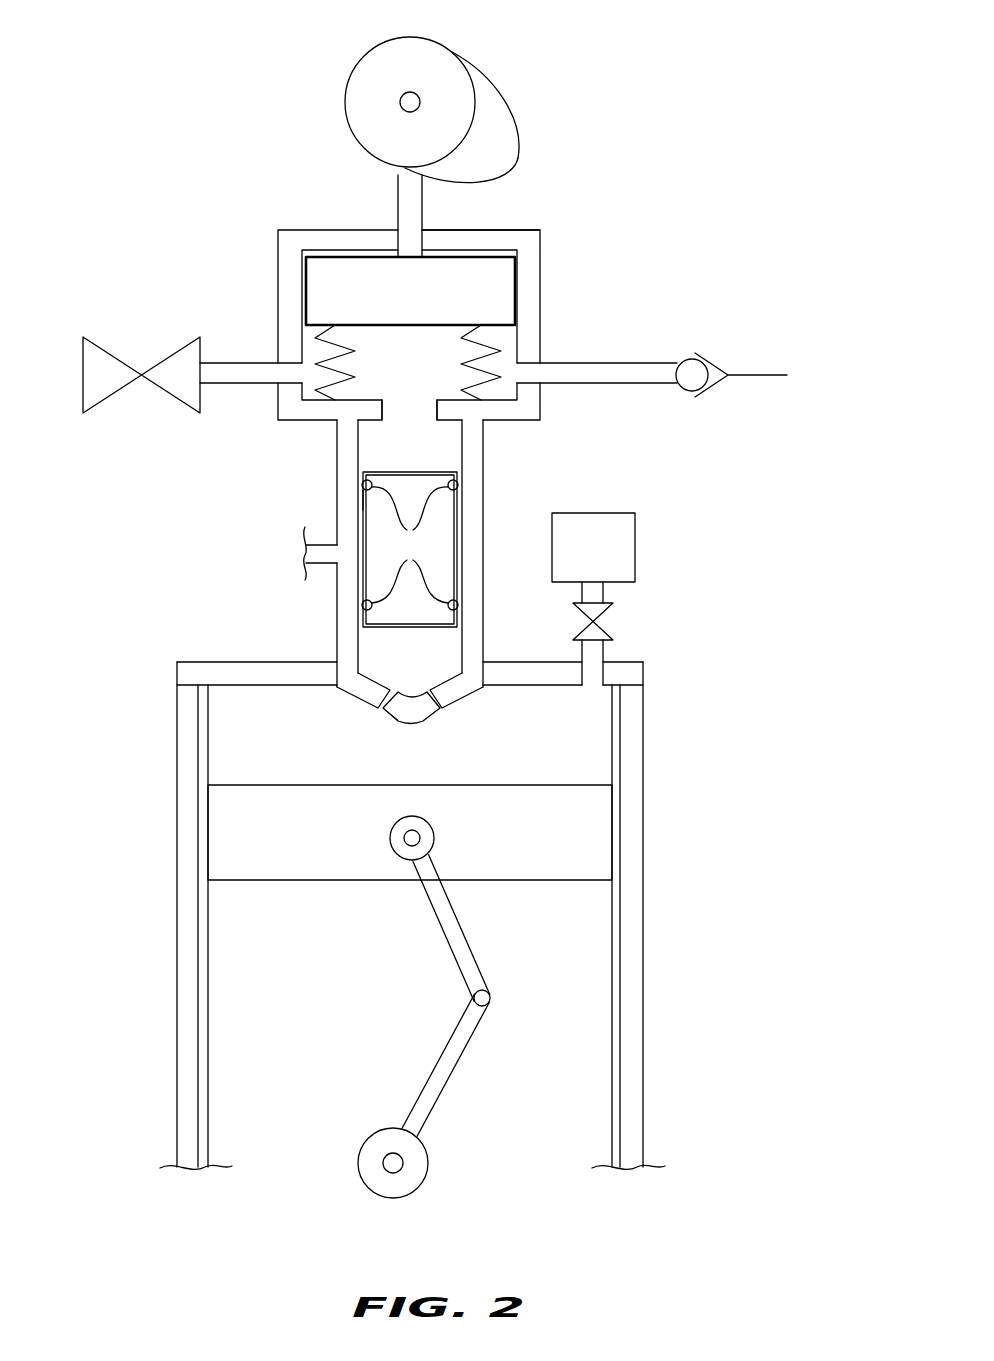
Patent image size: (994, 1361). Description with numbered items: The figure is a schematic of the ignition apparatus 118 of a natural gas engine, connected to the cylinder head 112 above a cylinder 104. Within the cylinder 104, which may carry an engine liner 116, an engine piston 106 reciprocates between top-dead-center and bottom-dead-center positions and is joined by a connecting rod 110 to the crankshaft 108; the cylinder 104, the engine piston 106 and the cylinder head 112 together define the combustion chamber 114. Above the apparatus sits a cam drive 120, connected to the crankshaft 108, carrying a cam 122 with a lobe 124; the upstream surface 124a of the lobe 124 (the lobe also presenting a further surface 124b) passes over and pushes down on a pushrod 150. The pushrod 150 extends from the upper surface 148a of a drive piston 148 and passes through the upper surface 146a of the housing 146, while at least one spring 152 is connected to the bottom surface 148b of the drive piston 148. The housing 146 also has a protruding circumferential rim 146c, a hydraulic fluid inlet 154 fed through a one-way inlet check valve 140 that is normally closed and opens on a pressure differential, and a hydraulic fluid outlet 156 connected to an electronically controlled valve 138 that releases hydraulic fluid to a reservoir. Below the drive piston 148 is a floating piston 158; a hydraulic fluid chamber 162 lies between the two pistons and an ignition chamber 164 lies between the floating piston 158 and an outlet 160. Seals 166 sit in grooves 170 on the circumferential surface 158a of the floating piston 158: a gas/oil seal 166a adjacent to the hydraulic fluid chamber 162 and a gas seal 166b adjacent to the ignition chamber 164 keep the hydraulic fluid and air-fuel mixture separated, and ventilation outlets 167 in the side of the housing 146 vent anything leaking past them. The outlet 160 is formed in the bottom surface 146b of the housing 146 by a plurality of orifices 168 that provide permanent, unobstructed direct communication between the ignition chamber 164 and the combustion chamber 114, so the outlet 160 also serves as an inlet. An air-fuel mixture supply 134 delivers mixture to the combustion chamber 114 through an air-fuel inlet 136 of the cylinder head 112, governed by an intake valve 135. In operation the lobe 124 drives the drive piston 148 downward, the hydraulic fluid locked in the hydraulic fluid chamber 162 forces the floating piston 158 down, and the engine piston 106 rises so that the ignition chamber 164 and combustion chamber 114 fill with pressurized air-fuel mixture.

The cylinder 104 is at (178, 778).
The engine piston 106 is at (605, 832).
The crankshaft 108 is at (425, 1170).
The connecting rod 110 is at (460, 1043).
The cylinder head 112 is at (218, 660).
The combustion chamber 114 is at (580, 740).
The engine liner 116 is at (210, 730).
The ignition apparatus 118 is at (677, 300).
The cam drive 120 is at (493, 55).
The cam 122 is at (352, 82).
The lobe 124 is at (512, 138).
The upstream surface 124a is at (447, 183).
The lobe leading surface 124b is at (503, 102).
The air-fuel mixture supply 134 is at (636, 537).
The intake valve 135 is at (608, 615).
The air-fuel inlet 136 is at (597, 660).
The electronically controlled valve 138 is at (110, 397).
The one-way inlet check valve 140 is at (705, 350).
The housing 146 is at (283, 257).
The upper surface of the housing 146a is at (508, 232).
The bottom surface of the housing 146b is at (465, 698).
The protruding circumferential rim 146c is at (437, 410).
The drive piston 148 is at (510, 270).
The upper surface of the drive piston 148a is at (322, 257).
The bottom surface of the drive piston 148b is at (352, 325).
The pushrod 150 is at (398, 213).
The spring 152 is at (325, 375).
The hydraulic fluid inlet 154 is at (545, 365).
The hydraulic fluid outlet 156 is at (280, 370).
The floating piston 158 is at (459, 512).
The circumferential surface of the floating piston 158a is at (365, 497).
The outlet 160 is at (405, 685).
The hydraulic fluid chamber 162 is at (455, 380).
The ignition chamber 164 is at (360, 645).
The seals 166 is at (361, 485).
The gas/oil seal 166a is at (459, 485).
The gas seal 166b is at (459, 605).
The ventilation outlets 167 is at (306, 545).
The orifices 168 is at (442, 710).
The grooves 170 is at (410, 545).